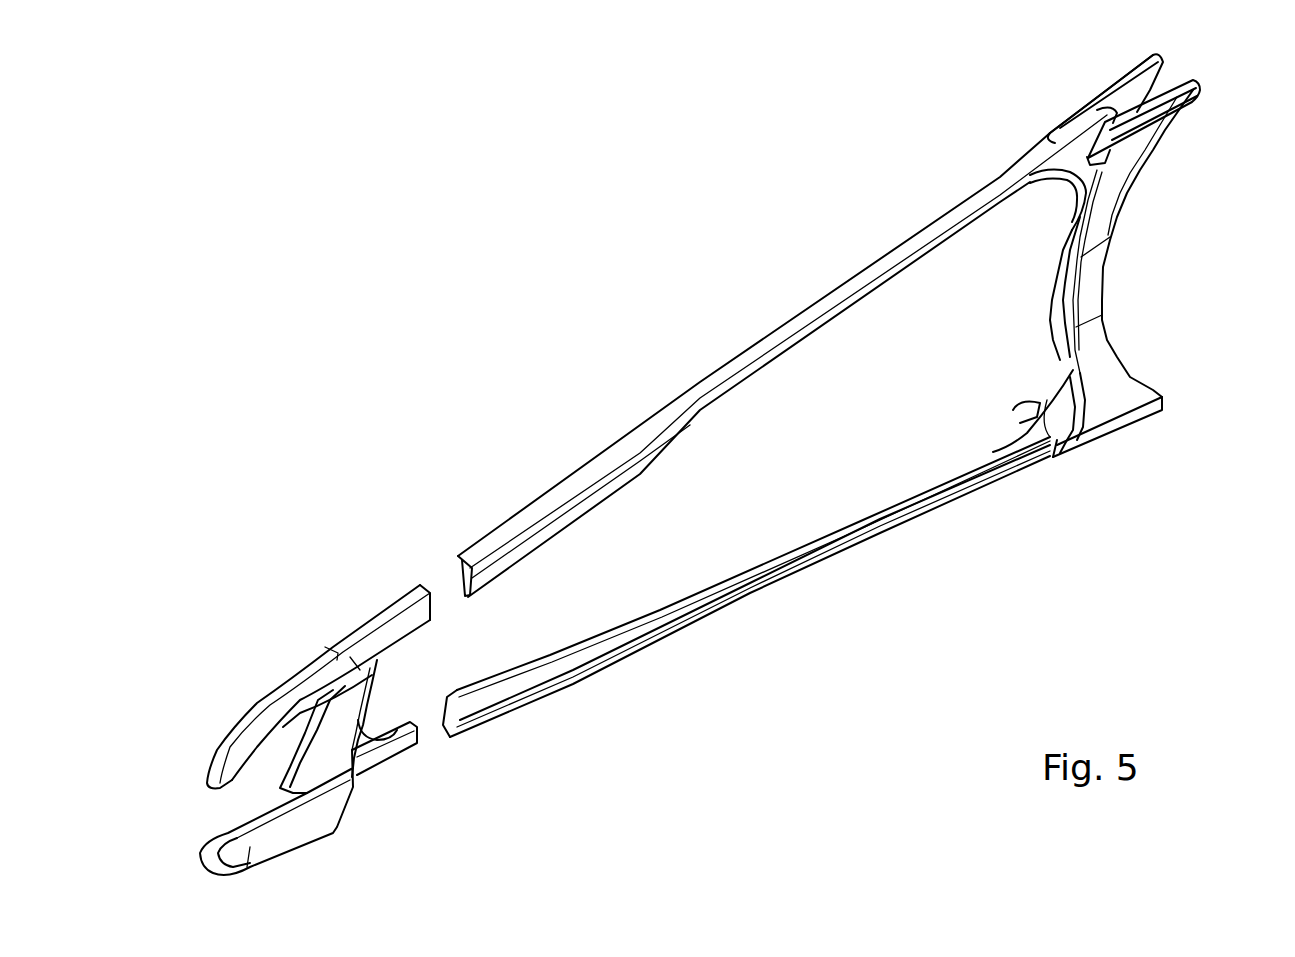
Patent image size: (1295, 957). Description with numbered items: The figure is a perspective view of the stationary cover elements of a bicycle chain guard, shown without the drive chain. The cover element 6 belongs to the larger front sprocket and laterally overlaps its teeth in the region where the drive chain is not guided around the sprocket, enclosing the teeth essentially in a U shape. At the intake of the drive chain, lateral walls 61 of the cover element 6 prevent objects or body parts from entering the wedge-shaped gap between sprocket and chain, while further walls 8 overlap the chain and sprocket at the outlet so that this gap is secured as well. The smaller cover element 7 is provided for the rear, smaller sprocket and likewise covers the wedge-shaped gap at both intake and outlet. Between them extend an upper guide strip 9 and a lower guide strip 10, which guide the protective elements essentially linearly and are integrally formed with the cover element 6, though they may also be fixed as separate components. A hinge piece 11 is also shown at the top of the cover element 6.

The cover element 6 is at (1090, 272).
The cover element 7 is at (333, 727).
The walls 8 is at (1108, 402).
The upper guide strip 9 is at (990, 198).
The lower guide strip 10 is at (830, 553).
The hinge piece 11 is at (1162, 88).
The lateral walls 61 is at (1137, 97).